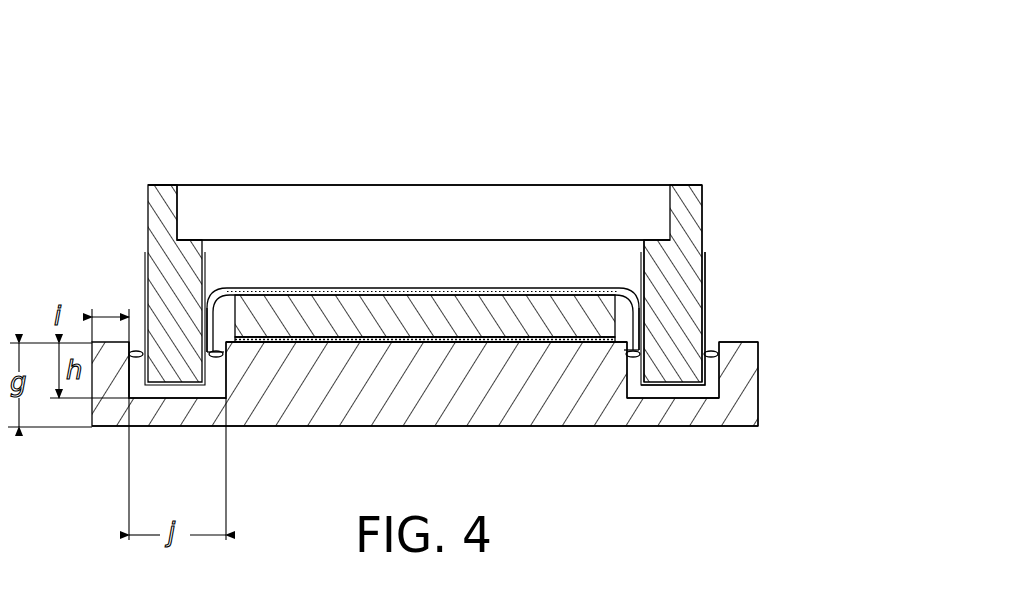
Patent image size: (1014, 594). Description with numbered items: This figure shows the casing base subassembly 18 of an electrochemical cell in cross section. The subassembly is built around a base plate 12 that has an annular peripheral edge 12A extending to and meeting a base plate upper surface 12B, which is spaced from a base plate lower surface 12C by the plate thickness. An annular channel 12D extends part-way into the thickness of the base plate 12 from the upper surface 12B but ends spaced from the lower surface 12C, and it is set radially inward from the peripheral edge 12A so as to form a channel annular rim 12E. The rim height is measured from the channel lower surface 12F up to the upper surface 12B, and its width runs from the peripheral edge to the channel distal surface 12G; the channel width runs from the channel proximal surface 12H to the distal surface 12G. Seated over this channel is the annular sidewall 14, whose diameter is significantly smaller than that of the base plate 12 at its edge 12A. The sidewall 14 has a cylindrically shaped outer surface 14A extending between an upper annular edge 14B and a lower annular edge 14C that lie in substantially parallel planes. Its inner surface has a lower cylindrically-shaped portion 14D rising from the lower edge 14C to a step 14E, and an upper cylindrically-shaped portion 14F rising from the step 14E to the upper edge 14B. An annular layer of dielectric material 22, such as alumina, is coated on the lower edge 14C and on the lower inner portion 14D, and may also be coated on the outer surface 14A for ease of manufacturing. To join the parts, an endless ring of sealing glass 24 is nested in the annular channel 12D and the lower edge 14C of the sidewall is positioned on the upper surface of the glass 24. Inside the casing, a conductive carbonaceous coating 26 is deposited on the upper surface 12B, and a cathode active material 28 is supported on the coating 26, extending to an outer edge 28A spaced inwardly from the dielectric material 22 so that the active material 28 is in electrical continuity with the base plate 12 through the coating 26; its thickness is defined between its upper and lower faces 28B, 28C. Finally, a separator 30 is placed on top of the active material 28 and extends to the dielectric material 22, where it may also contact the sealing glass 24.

The base subassembly 18 is at (717, 116).
The base plate 12 is at (110, 415).
The annular peripheral edge 12A is at (758, 363).
The base plate upper surface 12B is at (621, 340).
The base plate lower surface 12C is at (728, 427).
The annular channel 12D is at (225, 414).
The channel annular rim 12E is at (743, 342).
The channel lower surface 12F is at (672, 399).
The channel distal surface 12G is at (725, 392).
The channel proximal surface 12H is at (588, 372).
The annular sidewall 14 is at (178, 269).
The outer surface 14A is at (703, 212).
The upper annular edge 14B is at (152, 184).
The lower annular edge 14C is at (676, 378).
The lower cylindrically-shaped portion 14D is at (665, 284).
The step 14E is at (658, 239).
The upper cylindrically-shaped portion 14F is at (163, 217).
The dielectric material 22 is at (143, 295).
The sealing glass 24 is at (702, 399).
The conductive carbonaceous coating 26 is at (428, 345).
The cathode active material 28 is at (267, 313).
The outer edge 28A is at (206, 348).
The upper face 28B is at (348, 295).
The lower face 28C is at (358, 345).
The separator 30 is at (229, 288).